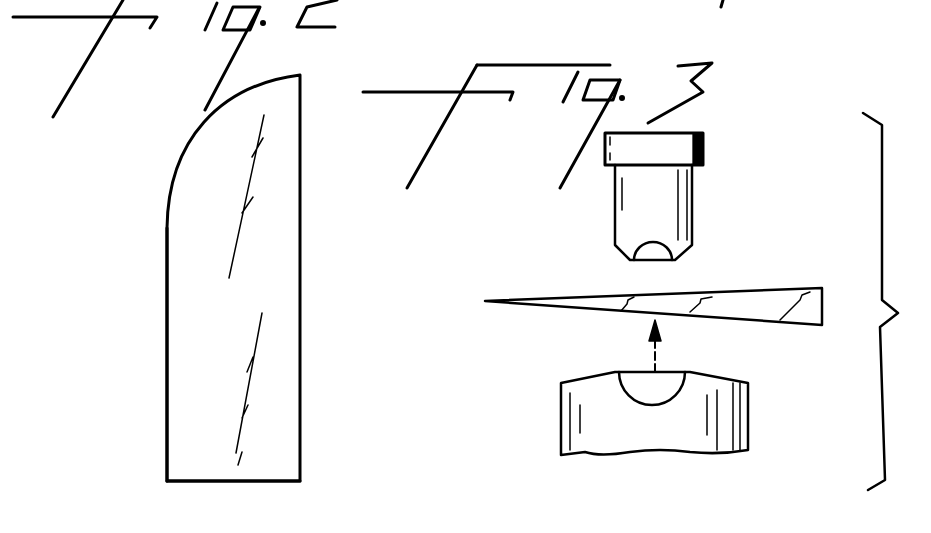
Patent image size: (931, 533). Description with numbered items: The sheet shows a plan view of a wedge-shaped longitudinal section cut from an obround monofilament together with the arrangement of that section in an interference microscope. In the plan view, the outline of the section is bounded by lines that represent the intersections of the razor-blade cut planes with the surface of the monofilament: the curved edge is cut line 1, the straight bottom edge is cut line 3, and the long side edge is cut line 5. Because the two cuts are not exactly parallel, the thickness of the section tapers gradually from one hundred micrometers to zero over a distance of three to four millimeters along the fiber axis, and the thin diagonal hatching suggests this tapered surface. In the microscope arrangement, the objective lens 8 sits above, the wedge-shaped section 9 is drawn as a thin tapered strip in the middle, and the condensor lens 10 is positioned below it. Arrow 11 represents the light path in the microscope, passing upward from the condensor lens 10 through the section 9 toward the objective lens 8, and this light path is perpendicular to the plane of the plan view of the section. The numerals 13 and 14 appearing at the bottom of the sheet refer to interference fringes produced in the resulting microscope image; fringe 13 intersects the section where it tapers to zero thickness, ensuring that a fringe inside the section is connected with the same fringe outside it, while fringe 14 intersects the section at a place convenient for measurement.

In FIG. 2, the cut plane intersection line 1 is at (302, 259).
In FIG. 2, the cut plane intersection line 3 is at (218, 481).
In FIG. 2, the cut plane intersection line 5 is at (165, 302).
In FIG. 3, the objective lens 8 is at (694, 212).
In FIG. 3, the section 9 is at (785, 288).
In FIG. 3, the condensor lens 10 is at (748, 427).
In FIG. 3, the light path arrow 11 is at (647, 352).
In FIG. 3, the interference fringe 13 is at (430, 517).
In FIG. 3, the interference fringe 14 is at (562, 524).